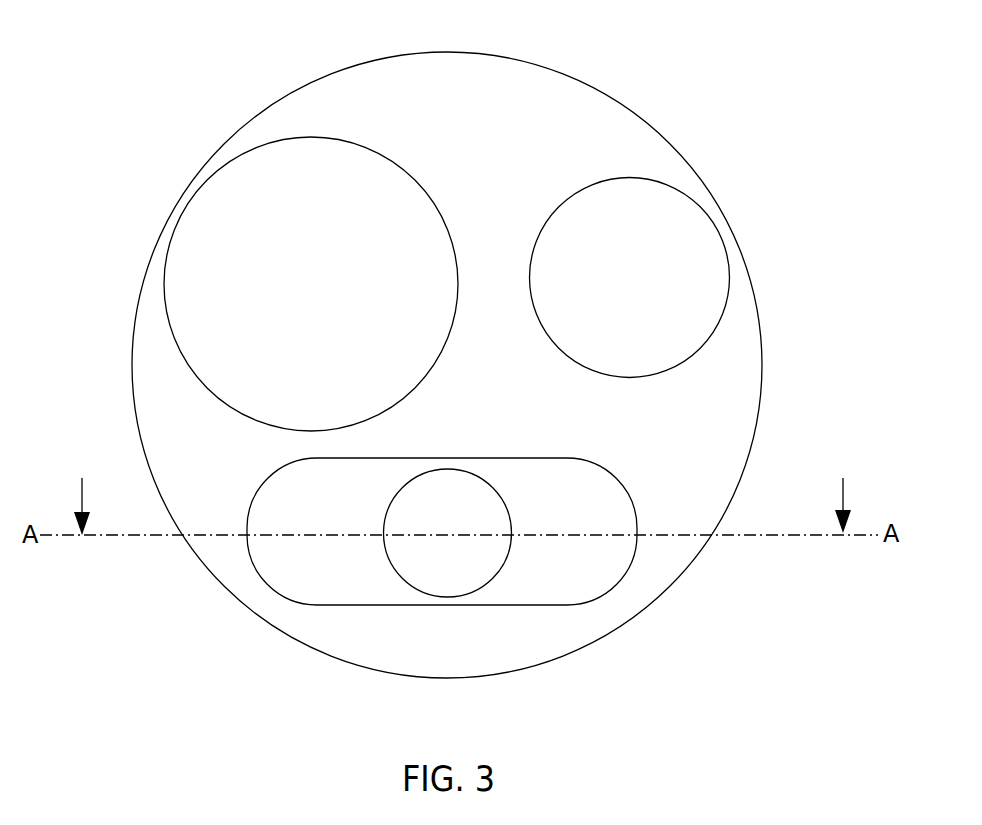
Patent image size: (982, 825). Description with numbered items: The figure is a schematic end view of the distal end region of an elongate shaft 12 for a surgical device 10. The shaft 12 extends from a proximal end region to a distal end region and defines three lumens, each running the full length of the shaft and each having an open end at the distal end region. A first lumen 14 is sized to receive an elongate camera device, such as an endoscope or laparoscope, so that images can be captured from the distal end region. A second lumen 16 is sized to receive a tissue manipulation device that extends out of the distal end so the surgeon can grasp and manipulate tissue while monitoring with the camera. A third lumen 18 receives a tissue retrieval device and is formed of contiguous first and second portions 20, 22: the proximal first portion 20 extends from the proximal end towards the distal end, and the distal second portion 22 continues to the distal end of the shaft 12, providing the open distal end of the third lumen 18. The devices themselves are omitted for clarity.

The surgical device 10 is at (447, 344).
The elongate shaft 12 is at (568, 113).
The first lumen 14 is at (218, 223).
The second lumen 16 is at (675, 218).
The third lumen 18 is at (346, 554).
The first portion 20 is at (440, 575).
The second portion 22 is at (297, 585).